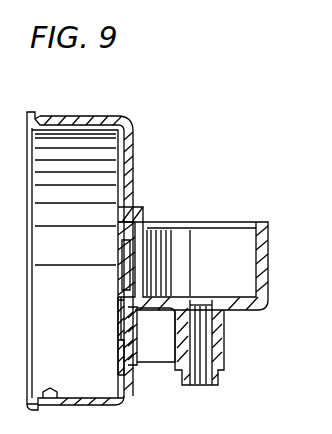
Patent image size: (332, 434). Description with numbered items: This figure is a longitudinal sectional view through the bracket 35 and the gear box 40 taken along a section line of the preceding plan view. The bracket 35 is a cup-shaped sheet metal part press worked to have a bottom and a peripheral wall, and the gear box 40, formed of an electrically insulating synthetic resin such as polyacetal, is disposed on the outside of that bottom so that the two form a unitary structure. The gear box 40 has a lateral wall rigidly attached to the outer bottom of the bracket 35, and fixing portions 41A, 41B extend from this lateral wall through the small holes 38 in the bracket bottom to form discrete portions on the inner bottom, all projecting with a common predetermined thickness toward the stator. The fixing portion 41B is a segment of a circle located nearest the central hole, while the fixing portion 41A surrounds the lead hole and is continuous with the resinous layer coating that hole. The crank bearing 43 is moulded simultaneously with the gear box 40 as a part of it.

The bracket 35 is at (119, 120).
The small holes 38 is at (134, 157).
The gear box 40 is at (270, 226).
The fixing portion 41A is at (122, 352).
The fixing portion 41B is at (122, 312).
The crank bearing 43 is at (204, 382).